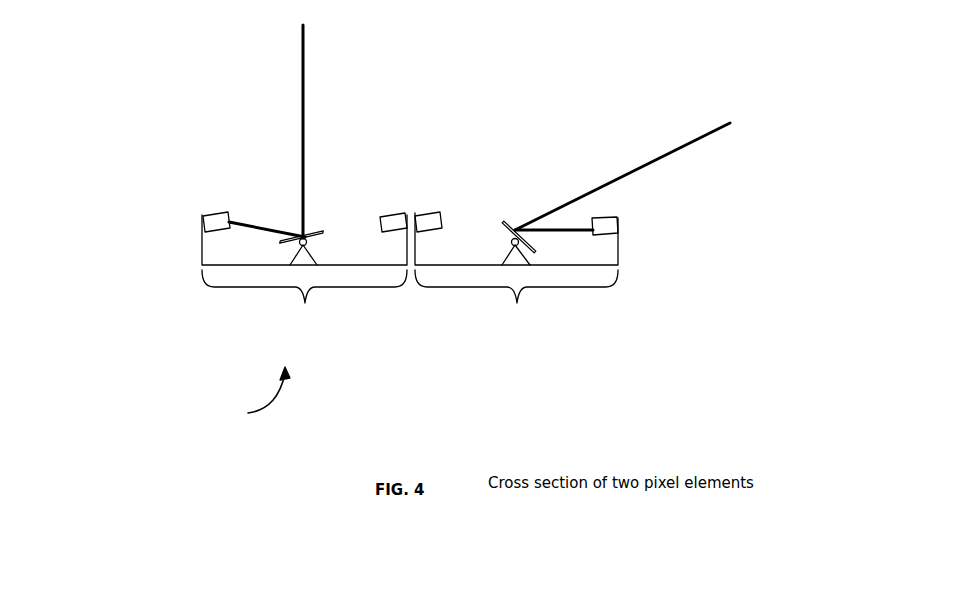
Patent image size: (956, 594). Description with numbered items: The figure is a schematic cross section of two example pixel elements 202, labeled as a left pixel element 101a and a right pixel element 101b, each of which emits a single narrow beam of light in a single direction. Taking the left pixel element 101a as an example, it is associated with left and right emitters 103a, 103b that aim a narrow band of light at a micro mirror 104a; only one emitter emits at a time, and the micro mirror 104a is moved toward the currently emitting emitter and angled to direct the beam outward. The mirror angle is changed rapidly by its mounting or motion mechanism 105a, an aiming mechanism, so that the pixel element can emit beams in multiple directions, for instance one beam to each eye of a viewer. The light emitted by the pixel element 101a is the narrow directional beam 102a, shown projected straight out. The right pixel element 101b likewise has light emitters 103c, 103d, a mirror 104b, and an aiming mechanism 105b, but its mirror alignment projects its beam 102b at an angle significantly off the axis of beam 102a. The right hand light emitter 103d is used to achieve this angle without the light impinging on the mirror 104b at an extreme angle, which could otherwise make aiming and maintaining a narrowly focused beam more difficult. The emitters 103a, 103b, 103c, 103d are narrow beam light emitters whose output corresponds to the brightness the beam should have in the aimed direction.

The pixel element 101a is at (304, 283).
The pixel element 101b is at (516, 282).
The light emitted by the pixel element 102a is at (302, 60).
The beam 102b is at (705, 135).
The left emitter 103a is at (203, 217).
The right emitter 103b is at (391, 234).
The light emitter 103c is at (440, 213).
The right hand light emitter 103d is at (618, 223).
The micro mirror 104a is at (280, 242).
The mirror 104b is at (513, 220).
The mounting or motion mechanism 105a is at (317, 243).
The aiming mechanism 105b is at (507, 251).
The pixel elements 202 is at (251, 394).